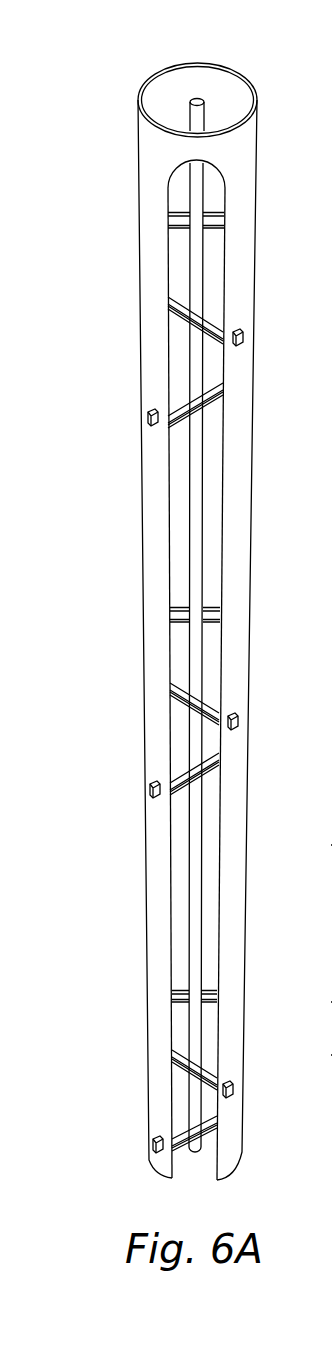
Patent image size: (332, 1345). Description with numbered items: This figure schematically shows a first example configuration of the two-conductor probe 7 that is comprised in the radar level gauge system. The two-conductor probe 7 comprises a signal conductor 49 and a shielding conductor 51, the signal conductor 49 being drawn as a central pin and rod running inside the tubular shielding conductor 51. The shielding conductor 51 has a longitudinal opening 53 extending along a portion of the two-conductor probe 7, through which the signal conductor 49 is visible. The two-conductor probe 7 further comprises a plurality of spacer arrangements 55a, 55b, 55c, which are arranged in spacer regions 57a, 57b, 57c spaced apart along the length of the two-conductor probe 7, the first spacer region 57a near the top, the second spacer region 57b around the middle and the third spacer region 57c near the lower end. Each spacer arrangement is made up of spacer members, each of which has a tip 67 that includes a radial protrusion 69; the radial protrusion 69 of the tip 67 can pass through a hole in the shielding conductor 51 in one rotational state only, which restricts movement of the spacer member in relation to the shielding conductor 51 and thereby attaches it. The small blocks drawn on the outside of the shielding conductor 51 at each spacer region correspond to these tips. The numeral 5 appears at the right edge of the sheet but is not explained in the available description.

The two-conductor probe 7 is at (118, 57).
The signal conductor 49 is at (207, 123).
The shielding conductor 51 is at (245, 192).
The longitudinal opening 53 is at (178, 513).
The spacer arrangement 55a is at (165, 194).
The spacer arrangement 55b is at (170, 573).
The spacer arrangement 55c is at (167, 952).
The first spacer region 57a is at (131, 212).
The spacer region 57b is at (133, 610).
The spacer region 57c is at (140, 983).
The device 5 is at (325, 833).
The radial protrusion 69 is at (331, 1002).
The tip 67 is at (331, 1055).